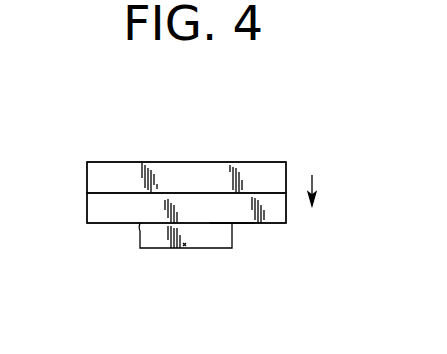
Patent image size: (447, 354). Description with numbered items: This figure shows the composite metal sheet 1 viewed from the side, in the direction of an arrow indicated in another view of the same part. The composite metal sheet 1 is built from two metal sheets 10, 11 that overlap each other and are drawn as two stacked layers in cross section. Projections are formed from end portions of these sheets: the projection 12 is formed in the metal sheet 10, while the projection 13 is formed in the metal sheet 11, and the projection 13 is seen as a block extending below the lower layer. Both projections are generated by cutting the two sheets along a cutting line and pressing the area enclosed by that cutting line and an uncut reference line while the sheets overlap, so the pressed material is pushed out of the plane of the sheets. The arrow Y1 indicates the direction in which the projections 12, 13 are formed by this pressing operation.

The composite metal sheet 1 is at (275, 137).
The metal sheet 10 is at (99, 176).
The metal sheet 11 is at (104, 214).
The projection 12 is at (210, 223).
The projection 13 is at (183, 249).
The arrow Y1 is at (312, 182).